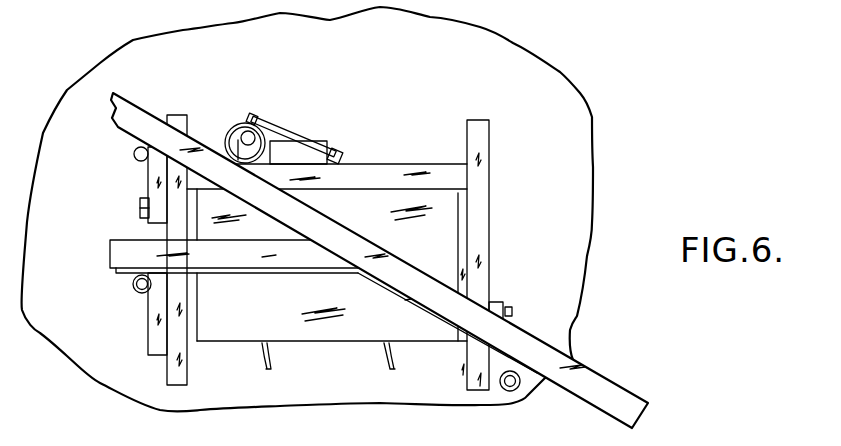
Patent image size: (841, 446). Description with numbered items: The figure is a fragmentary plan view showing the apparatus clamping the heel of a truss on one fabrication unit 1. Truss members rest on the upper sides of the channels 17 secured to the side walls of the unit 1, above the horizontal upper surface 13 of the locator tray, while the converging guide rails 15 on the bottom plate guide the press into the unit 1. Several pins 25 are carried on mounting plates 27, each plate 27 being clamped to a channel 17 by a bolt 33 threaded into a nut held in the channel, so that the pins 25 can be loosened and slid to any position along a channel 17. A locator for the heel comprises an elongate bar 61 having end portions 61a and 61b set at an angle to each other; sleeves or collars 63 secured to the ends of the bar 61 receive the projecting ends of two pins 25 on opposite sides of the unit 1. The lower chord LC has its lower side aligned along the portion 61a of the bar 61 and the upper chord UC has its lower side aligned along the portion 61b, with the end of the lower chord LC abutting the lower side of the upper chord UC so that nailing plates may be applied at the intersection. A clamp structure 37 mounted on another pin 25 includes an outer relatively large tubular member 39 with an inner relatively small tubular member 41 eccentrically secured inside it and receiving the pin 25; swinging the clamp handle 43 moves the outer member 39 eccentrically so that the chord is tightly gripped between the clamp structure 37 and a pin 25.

The unit 1 is at (398, 107).
The upper surface of tray 13 is at (250, 335).
The guide rails 15 is at (272, 367).
The channels 17 is at (408, 164).
The pins 25 is at (252, 132).
The mounting plate 27 is at (330, 160).
The bolt 33 is at (320, 157).
The clamp structure 37 is at (231, 99).
The outer tubular member 39 is at (228, 131).
The inner tubular member 41 is at (268, 131).
The clamp handle 43 is at (293, 140).
The elongate bar 61 is at (325, 306).
The end portion of bar 61a is at (270, 271).
The end portion of bar 61b is at (404, 300).
The sleeves or collars 63 is at (135, 293).
The lower chord LC is at (211, 258).
The upper chord UC is at (626, 383).